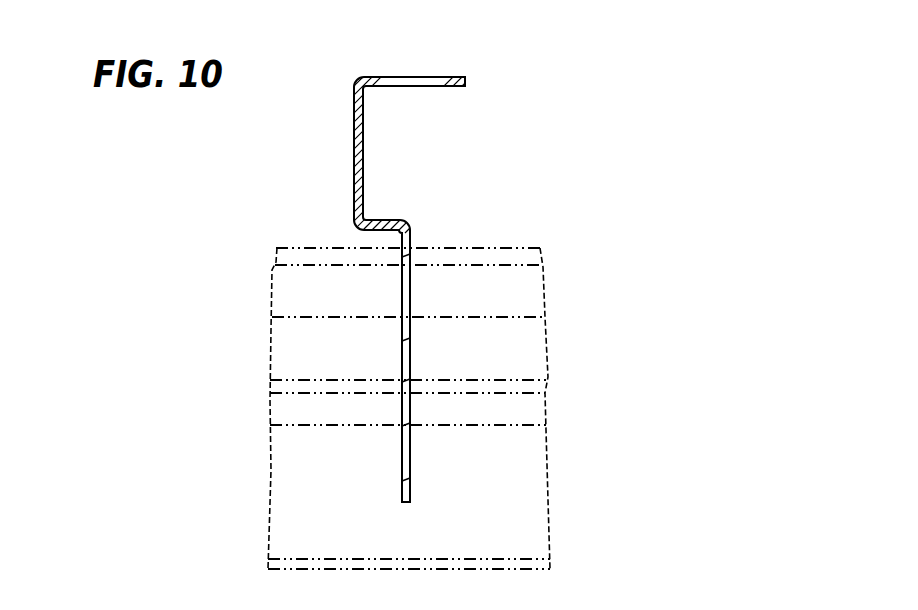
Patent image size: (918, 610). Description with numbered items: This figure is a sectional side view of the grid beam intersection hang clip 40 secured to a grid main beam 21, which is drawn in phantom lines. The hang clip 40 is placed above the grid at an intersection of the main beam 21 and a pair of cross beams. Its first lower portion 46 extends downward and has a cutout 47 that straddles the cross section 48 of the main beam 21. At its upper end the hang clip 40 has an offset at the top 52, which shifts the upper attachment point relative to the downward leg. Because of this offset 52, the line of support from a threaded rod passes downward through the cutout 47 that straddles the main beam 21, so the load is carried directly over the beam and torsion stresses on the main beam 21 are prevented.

The main beam 21 is at (519, 234).
The grid beam intersection hang clip 40 is at (414, 286).
The first lower portion 46 is at (411, 456).
The cutout 47 is at (403, 288).
The cross section 48 is at (281, 303).
The offset at the top 52 is at (353, 160).